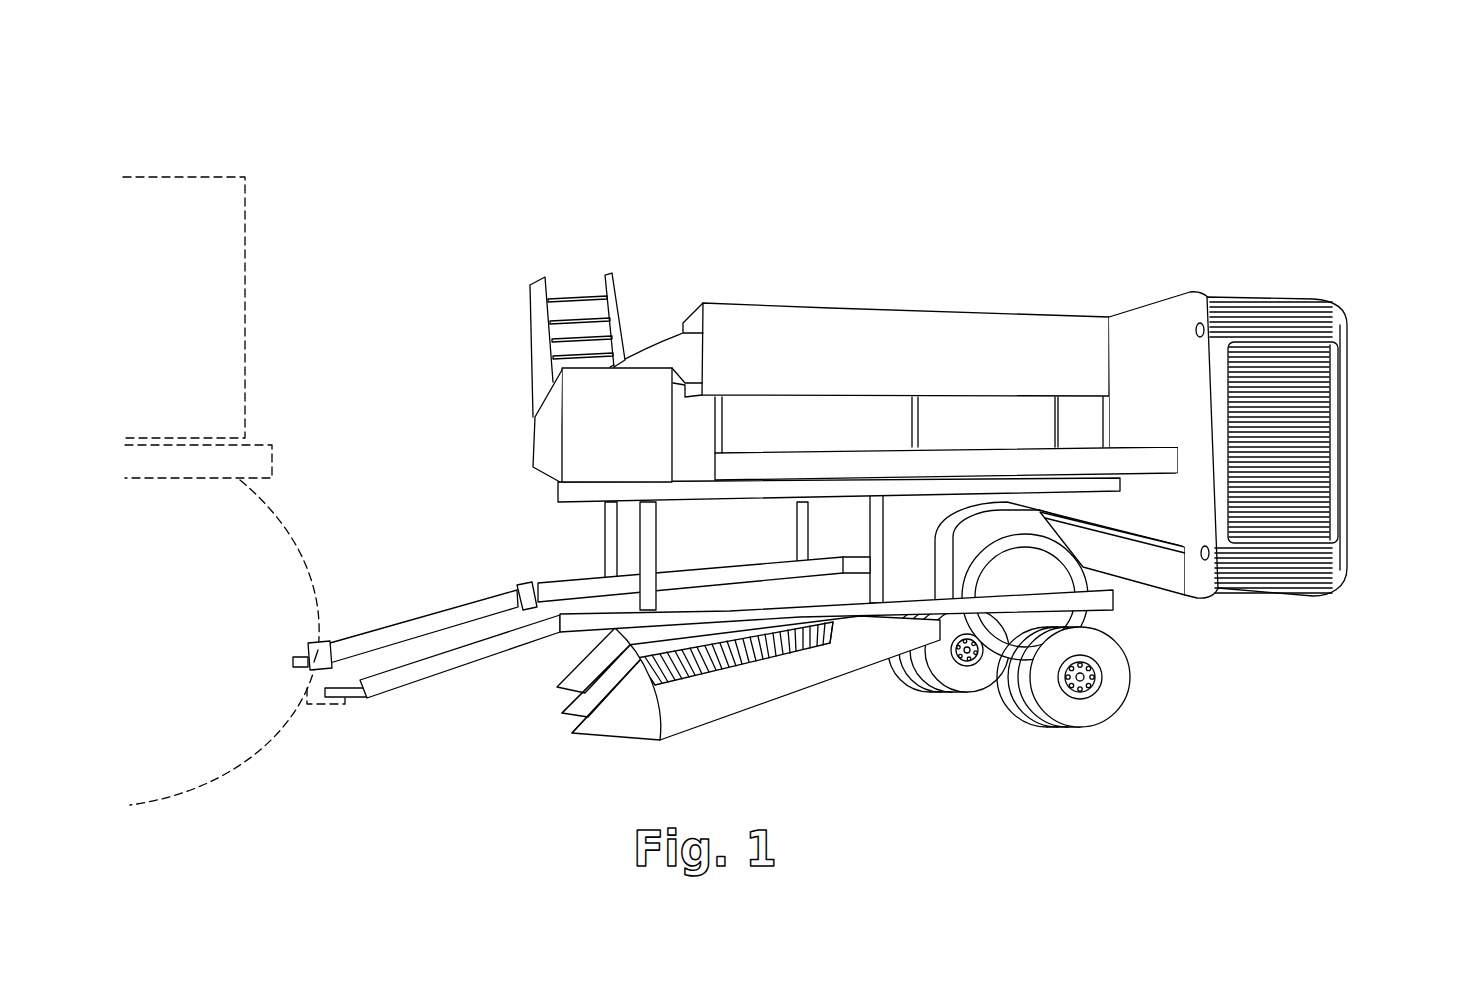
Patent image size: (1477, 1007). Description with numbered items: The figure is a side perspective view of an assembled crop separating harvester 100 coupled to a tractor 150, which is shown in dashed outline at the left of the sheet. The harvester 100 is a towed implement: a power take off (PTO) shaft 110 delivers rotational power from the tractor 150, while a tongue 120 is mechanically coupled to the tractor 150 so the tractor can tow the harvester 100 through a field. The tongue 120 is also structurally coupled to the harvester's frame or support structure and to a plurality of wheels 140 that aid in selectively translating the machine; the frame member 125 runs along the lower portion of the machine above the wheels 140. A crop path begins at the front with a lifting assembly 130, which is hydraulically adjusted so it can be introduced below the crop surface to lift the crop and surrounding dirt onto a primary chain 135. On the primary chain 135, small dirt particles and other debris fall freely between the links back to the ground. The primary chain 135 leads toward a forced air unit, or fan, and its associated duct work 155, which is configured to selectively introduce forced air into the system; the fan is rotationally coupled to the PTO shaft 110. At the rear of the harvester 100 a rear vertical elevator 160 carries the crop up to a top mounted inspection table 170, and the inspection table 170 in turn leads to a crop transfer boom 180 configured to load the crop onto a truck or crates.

The crop separating harvester 100 is at (815, 95).
The power take off (PTO) shaft 110 is at (422, 625).
The tongue 120 is at (420, 682).
The frame 125 is at (1117, 608).
The lifting assembly 130 is at (600, 722).
The primary chain 135 is at (737, 663).
The wheels 140 is at (1092, 733).
The tractor 150 is at (323, 336).
The duct work 155 is at (1138, 564).
The rear vertical elevator 160 is at (1372, 385).
The inspection table 170 is at (857, 261).
The crop transfer boom 180 is at (504, 264).